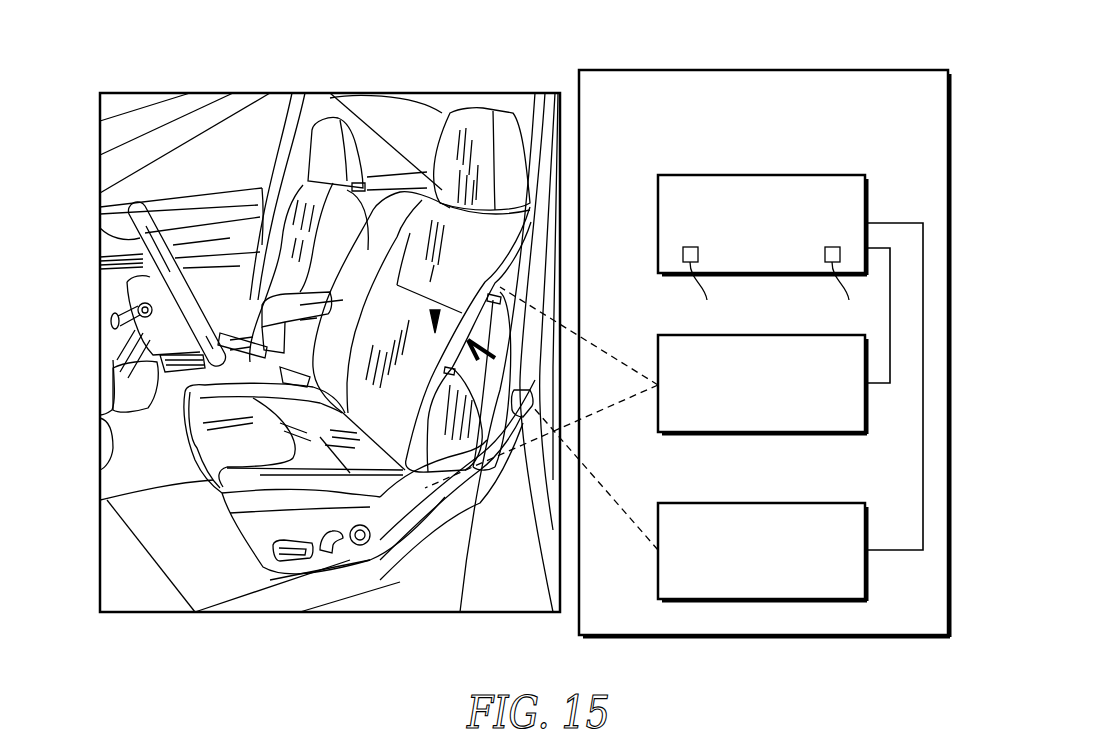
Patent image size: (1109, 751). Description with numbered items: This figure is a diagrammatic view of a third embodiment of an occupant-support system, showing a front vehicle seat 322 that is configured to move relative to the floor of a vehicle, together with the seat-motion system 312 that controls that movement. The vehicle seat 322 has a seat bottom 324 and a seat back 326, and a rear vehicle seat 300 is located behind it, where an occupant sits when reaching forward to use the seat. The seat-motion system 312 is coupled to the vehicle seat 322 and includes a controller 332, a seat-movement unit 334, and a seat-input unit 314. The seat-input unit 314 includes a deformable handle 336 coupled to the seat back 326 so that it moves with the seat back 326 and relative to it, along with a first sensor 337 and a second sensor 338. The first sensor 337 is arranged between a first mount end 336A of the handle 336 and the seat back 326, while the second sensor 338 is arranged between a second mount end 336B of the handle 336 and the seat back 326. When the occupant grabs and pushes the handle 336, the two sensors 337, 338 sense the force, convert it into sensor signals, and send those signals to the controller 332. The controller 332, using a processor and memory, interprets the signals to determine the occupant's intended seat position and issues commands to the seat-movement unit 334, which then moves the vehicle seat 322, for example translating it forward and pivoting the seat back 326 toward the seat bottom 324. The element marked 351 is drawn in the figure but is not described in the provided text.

The rear vehicle seat 300 is at (407, 357).
The seat-motion system 312 is at (722, 65).
The seat-input unit 314 is at (795, 503).
The vehicle seat 322 is at (448, 213).
The seat bottom 324 is at (238, 495).
The seat back 326 is at (395, 357).
The controller 332 is at (795, 175).
The seat-movement unit 334 is at (690, 335).
The handle 336 is at (460, 612).
The first mount end 336A is at (405, 470).
The second mount end 336B is at (514, 410).
The first sensor 337 is at (450, 373).
The second sensor 338 is at (493, 305).
The steering column lever 351 is at (150, 253).